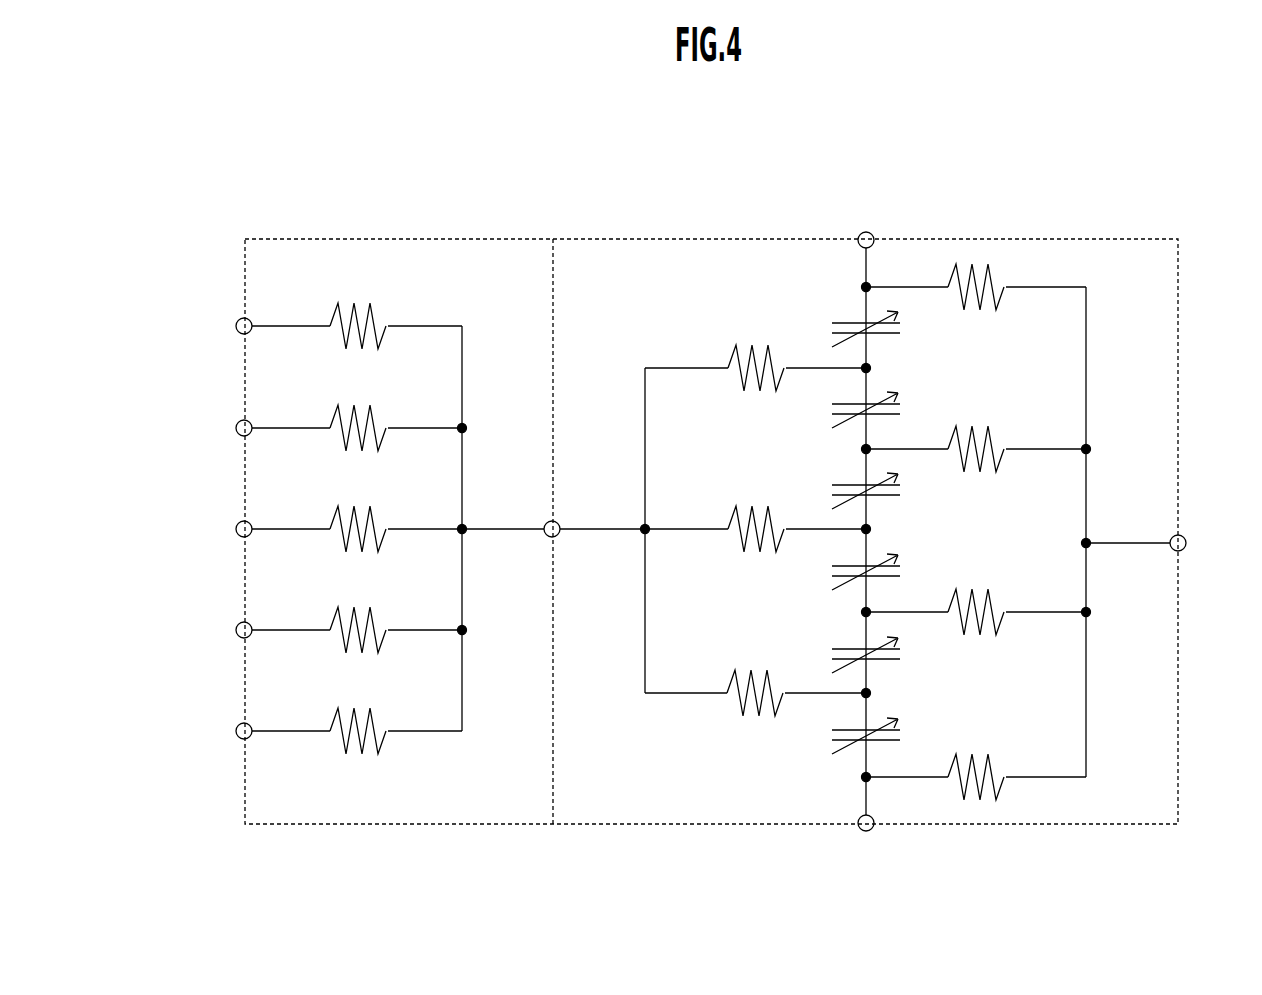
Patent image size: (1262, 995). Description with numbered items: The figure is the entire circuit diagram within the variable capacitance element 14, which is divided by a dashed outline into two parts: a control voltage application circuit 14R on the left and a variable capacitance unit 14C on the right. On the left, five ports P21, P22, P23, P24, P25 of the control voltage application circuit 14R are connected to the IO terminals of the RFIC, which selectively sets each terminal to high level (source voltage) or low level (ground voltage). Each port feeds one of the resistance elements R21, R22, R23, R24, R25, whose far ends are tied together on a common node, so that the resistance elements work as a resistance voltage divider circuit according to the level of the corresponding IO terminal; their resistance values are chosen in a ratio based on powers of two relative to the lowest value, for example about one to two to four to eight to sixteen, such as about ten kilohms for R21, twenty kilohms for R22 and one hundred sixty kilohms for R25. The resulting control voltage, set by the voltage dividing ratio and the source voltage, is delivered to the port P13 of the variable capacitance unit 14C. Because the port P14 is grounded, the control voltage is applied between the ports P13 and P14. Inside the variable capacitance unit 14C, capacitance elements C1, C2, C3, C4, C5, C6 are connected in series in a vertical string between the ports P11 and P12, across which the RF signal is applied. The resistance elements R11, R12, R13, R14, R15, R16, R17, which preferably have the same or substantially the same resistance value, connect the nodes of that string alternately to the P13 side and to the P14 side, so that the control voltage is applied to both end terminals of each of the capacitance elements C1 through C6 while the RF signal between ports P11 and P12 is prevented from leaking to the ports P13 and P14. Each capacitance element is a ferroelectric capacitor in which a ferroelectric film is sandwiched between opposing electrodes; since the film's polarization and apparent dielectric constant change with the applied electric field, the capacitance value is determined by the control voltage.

The variable capacitance element 14 is at (1256, 187).
The control voltage application circuit 14R is at (393, 239).
The variable capacitance unit 14C is at (1000, 239).
The port P11 is at (866, 223).
The port P12 is at (866, 841).
The port P13 is at (553, 515).
The port P14 is at (1159, 544).
The port P21 is at (258, 326).
The port P22 is at (258, 428).
The port P23 is at (258, 529).
The port P24 is at (258, 630).
The port P25 is at (258, 731).
The resistance element R11 is at (976, 307).
The resistance element R12 is at (755, 352).
The resistance element R13 is at (976, 469).
The resistance element R14 is at (755, 515).
The resistance element R15 is at (976, 597).
The resistance element R16 is at (755, 712).
The resistance element R17 is at (976, 760).
The resistance element R21 is at (396, 346).
The resistance element R22 is at (396, 448).
The resistance element R23 is at (396, 549).
The resistance element R24 is at (396, 650).
The resistance element R25 is at (396, 751).
The capacitance element C1 is at (884, 330).
The capacitance element C2 is at (884, 410).
The capacitance element C3 is at (884, 492).
The capacitance element C4 is at (884, 572).
The capacitance element C5 is at (884, 655).
The capacitance element C6 is at (884, 736).